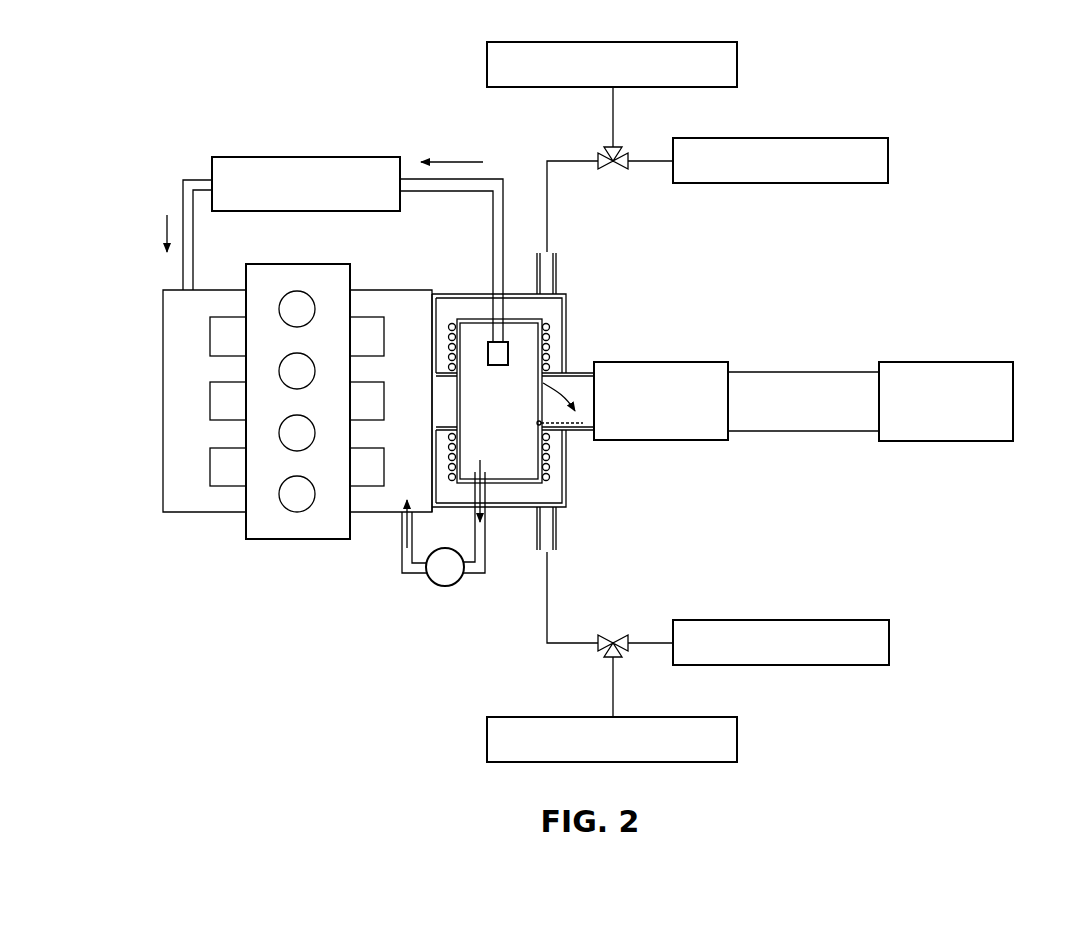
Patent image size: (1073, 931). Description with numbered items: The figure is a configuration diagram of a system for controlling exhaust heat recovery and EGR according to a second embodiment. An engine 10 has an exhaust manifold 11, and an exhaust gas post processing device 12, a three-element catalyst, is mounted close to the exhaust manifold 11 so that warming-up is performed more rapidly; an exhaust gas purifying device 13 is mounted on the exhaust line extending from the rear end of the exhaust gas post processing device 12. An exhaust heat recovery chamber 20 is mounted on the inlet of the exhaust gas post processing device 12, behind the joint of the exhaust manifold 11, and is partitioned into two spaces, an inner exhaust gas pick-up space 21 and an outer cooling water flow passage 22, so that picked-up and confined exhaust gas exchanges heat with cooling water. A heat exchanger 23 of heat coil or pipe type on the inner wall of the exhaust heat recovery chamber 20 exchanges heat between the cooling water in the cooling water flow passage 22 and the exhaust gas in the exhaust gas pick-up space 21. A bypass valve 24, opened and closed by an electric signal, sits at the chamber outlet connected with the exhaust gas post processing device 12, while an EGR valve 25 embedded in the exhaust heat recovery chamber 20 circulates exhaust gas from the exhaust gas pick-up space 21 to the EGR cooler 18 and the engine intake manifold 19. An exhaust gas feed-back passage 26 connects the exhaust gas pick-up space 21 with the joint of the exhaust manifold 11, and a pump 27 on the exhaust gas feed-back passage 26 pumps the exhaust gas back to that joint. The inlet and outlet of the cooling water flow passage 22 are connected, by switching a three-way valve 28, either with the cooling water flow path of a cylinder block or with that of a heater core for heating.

The engine 10 is at (294, 542).
The exhaust manifold 11 is at (370, 503).
The exhaust gas post processing device 12 is at (673, 362).
The exhaust gas purifying device 13 is at (946, 362).
The EGR cooler 18 is at (300, 157).
The engine intake manifold 19 is at (193, 503).
The exhaust heat recovery chamber 20 is at (548, 427).
The exhaust gas pick-up space 21 is at (523, 467).
The cooling water flow passage 22 is at (557, 492).
The heat exchanger 23 is at (549, 445).
The bypass valve 24 is at (540, 395).
The EGR valve 25 is at (488, 343).
The exhaust gas feed-back passage 26 is at (473, 573).
The pump 27 is at (433, 587).
The 3-way valve 28 is at (597, 156).